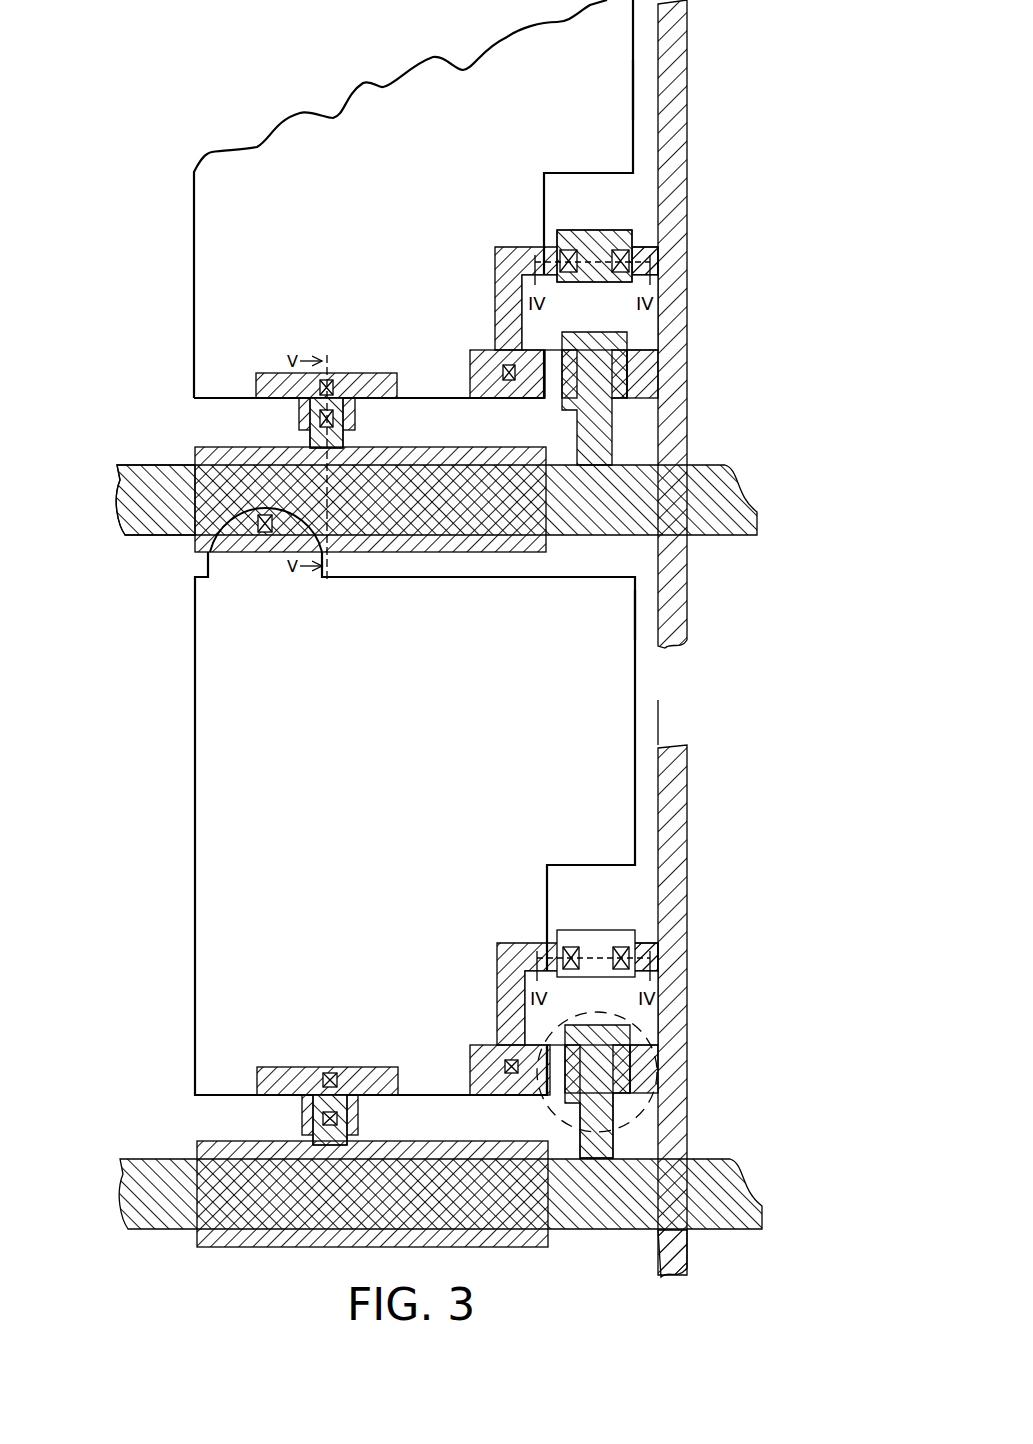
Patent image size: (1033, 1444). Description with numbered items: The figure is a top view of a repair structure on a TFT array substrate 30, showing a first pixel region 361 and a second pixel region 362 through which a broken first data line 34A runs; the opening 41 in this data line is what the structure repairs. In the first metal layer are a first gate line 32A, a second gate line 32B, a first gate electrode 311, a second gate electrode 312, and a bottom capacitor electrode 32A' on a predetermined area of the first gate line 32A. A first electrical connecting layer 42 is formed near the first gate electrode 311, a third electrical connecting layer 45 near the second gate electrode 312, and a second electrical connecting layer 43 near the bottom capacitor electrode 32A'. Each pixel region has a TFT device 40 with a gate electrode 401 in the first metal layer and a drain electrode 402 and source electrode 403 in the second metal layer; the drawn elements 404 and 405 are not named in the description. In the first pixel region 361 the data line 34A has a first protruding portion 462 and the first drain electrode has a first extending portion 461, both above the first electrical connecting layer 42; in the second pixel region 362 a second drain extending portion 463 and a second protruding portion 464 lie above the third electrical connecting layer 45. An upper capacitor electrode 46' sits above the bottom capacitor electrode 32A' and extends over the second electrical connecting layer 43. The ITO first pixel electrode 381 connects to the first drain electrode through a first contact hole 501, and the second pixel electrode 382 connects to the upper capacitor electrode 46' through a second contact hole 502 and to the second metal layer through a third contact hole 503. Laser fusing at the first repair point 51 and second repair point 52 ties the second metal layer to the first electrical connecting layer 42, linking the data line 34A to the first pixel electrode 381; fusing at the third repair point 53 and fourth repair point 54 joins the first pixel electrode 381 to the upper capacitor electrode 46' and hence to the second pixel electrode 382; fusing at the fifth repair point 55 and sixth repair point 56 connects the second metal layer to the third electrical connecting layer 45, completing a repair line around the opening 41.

The TFT array substrate 30 is at (183, 143).
The first gate electrode 311 is at (687, 408).
The second gate electrode 312 is at (668, 1022).
The first gate line 32A is at (479, 500).
The bottom capacitor electrode 32A' is at (132, 475).
The second gate line 32B is at (717, 1197).
The first data line 34A is at (690, 1242).
The first pixel region 361 is at (587, 83).
The second pixel region 362 is at (585, 617).
The first pixel electrode 381 is at (412, 178).
The second pixel electrode 382 is at (415, 870).
The TFT device 40 is at (662, 1075).
The gate electrode 401 is at (600, 1095).
The drain electrode 402 is at (546, 1100).
The source electrode 403 is at (690, 1127).
The upper fastening block 404 is at (640, 357).
The spacer 405 is at (643, 373).
The opening 41 is at (676, 713).
The first electrical connecting layer 42 is at (592, 240).
The second electrical connecting layer 43 is at (385, 373).
The third electrical connecting layer 45 is at (595, 945).
The upper capacitor electrode 46' is at (335, 460).
The first extending portion 461 is at (522, 262).
The first protruding portion 462 is at (643, 245).
The second drain extending portion 463 is at (330, 453).
The second protruding portion 464 is at (648, 945).
The first contact hole 501 is at (505, 355).
The second contact hole 502 is at (267, 533).
The third contact hole 503 is at (512, 1060).
The first repair point 51 is at (569, 273).
The second repair point 52 is at (620, 273).
The third repair point 53 is at (327, 380).
The fourth repair point 54 is at (308, 415).
The fifth repair point 55 is at (571, 970).
The sixth repair point 56 is at (620, 970).